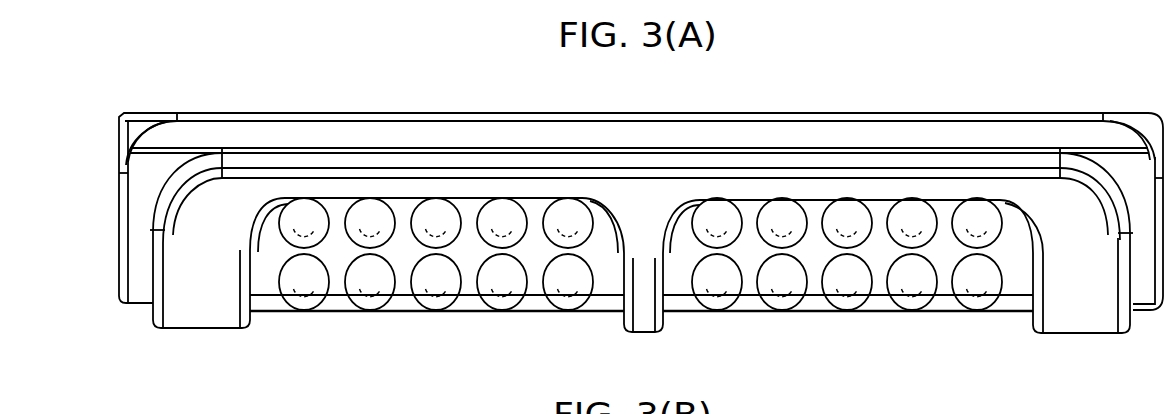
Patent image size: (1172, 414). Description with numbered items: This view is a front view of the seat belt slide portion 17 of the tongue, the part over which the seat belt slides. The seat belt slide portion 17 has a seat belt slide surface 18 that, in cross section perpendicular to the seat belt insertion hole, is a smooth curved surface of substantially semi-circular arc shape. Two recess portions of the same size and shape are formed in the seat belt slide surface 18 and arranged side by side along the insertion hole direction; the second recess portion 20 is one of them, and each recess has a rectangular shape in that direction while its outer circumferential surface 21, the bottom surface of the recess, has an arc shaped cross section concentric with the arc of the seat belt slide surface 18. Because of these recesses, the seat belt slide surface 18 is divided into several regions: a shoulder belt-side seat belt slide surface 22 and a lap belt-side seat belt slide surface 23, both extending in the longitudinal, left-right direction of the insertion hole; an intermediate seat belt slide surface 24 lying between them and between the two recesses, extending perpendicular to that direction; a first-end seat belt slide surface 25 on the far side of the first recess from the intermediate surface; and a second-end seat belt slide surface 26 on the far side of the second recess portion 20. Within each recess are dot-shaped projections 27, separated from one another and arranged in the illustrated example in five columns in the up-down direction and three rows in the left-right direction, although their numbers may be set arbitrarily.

The seat belt slide portion 17 is at (189, 320).
The seat belt slide surface 18 is at (1062, 337).
The second recess portion 20 is at (622, 272).
The outer circumferential surfaces 21 is at (603, 225).
The shoulder belt-side seat belt slide surface 22 is at (464, 312).
The lap belt-side seat belt slide surface 23 is at (839, 195).
The intermediate seat belt slide surface 24 is at (645, 333).
The first-end seat belt slide surface 25 is at (1105, 320).
The second-end seat belt slide surface 26 is at (228, 318).
The projections 27 is at (437, 228).